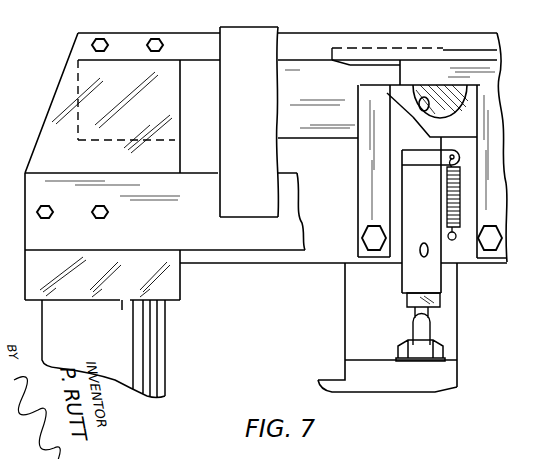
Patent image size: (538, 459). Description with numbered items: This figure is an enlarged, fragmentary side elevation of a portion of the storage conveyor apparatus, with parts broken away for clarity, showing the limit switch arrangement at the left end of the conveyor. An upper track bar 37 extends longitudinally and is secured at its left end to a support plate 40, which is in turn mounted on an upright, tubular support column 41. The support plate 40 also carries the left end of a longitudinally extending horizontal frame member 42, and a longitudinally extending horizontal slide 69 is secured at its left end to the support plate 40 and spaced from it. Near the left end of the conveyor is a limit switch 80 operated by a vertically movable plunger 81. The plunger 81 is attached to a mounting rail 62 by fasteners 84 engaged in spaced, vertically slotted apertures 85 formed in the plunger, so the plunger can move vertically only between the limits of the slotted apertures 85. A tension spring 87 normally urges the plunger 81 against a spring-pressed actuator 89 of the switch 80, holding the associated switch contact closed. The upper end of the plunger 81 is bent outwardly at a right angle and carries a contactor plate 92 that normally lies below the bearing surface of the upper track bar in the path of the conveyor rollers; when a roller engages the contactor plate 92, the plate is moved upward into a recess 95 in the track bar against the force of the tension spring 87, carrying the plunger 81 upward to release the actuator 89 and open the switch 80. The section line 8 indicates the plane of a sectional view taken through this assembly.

The upper track bar 37 is at (195, 37).
The recess 95 is at (383, 52).
The section line 8- 8 is at (467, 312).
The contactor plate 92 is at (350, 66).
The support plate 40 is at (42, 132).
The horizontal frame member 42 is at (307, 140).
The fasteners 84 is at (418, 108).
The slotted apertures 85 is at (437, 113).
The tension spring 87 is at (448, 194).
The horizontal slide 69 is at (257, 248).
The mounting rail 62 is at (337, 258).
The plunger 81 is at (402, 280).
The tubular support column 41 is at (167, 340).
The spring-pressed actuator 89 is at (415, 333).
The limit switch 80 is at (348, 376).